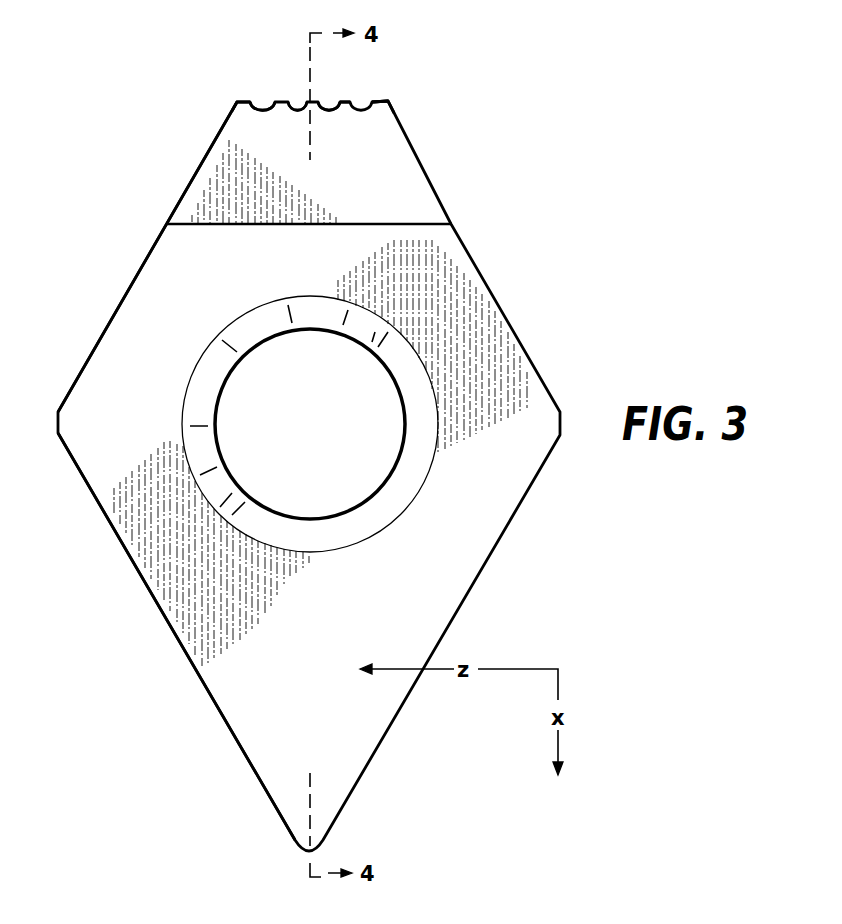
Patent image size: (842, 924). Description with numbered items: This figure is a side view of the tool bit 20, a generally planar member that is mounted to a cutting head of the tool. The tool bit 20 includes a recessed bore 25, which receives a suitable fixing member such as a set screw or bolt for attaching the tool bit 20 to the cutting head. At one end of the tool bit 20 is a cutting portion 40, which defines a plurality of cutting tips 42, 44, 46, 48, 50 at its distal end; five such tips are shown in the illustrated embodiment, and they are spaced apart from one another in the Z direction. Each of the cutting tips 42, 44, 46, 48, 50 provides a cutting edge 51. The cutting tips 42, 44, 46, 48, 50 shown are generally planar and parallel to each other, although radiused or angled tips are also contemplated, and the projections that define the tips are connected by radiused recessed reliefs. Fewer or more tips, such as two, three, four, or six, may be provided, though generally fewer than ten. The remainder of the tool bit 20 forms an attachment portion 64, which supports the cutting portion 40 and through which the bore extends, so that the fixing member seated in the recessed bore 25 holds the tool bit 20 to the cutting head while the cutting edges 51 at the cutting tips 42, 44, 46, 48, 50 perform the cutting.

The tool bit 20 is at (196, 48).
The recessed bore 25 is at (257, 343).
The cutting portion 40 is at (197, 172).
The cutting tip 42 is at (237, 104).
The cutting tip 44 is at (260, 106).
The cutting tip 46 is at (302, 108).
The cutting tip 48 is at (345, 108).
The cutting tip 50 is at (389, 101).
The cutting edge 51 is at (347, 93).
The attachment portion 64 is at (150, 596).